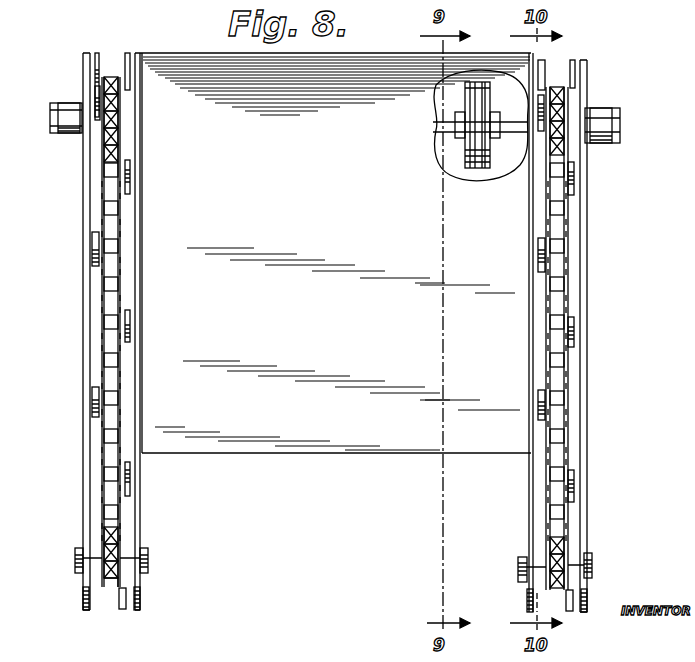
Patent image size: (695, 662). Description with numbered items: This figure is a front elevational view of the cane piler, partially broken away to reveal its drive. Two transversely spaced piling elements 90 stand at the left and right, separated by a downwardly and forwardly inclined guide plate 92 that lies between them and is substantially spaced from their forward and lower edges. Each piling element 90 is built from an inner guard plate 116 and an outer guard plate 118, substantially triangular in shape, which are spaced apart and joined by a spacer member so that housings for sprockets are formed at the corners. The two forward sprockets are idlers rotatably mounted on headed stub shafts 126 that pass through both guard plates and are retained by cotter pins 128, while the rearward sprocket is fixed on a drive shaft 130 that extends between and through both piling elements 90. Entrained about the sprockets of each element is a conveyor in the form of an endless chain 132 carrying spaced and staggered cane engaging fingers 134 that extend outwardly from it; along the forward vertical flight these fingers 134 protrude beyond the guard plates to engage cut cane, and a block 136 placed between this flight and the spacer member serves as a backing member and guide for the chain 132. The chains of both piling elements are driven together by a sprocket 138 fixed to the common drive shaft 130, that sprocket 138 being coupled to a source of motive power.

The piling elements 90 is at (80, 363).
The guide plate 92 is at (305, 422).
The inner guard plate 116 is at (137, 510).
The outer guard plate 118 is at (100, 497).
The headed stub shafts 126 is at (76, 562).
The cotter pins 128 is at (148, 567).
The drive shaft 130 is at (512, 126).
The endless chain 132 is at (100, 300).
The cane engaging fingers 134 is at (98, 255).
The block 136 is at (100, 187).
The sprocket 138 is at (468, 148).